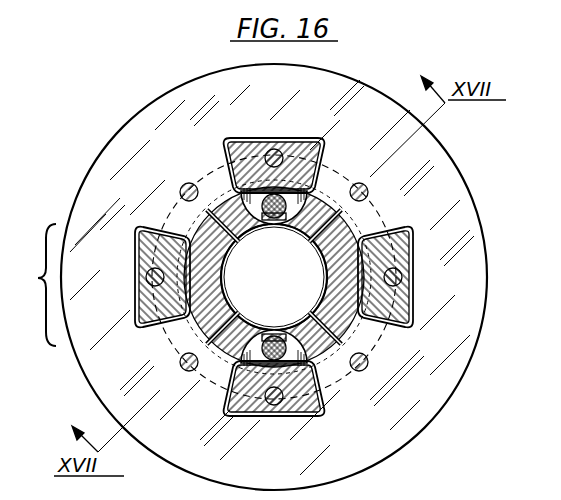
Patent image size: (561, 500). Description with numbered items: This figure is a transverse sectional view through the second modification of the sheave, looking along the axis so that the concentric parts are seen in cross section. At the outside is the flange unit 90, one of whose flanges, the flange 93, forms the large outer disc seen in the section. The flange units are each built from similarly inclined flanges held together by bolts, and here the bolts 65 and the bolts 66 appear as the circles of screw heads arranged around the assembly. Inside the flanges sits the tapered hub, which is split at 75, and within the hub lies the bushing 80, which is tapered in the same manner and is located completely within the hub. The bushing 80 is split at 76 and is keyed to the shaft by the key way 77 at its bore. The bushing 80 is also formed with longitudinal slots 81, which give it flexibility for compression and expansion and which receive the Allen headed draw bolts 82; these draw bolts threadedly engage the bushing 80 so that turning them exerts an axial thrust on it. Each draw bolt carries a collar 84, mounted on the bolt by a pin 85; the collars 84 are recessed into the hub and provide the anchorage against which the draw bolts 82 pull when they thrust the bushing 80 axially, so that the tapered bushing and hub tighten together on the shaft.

The bolts 65 is at (274, 150).
The bolts 66 is at (183, 187).
The split 75 is at (222, 224).
The split 76 is at (322, 276).
The key way 77 is at (222, 268).
The bushing 80 is at (344, 210).
The longitudinal slots 81 is at (268, 218).
The Allen headed draw bolts 82 is at (280, 222).
The collars 84 is at (310, 193).
The pins 85 is at (235, 193).
The flange unit 90 is at (37, 285).
The flange 93 is at (480, 273).